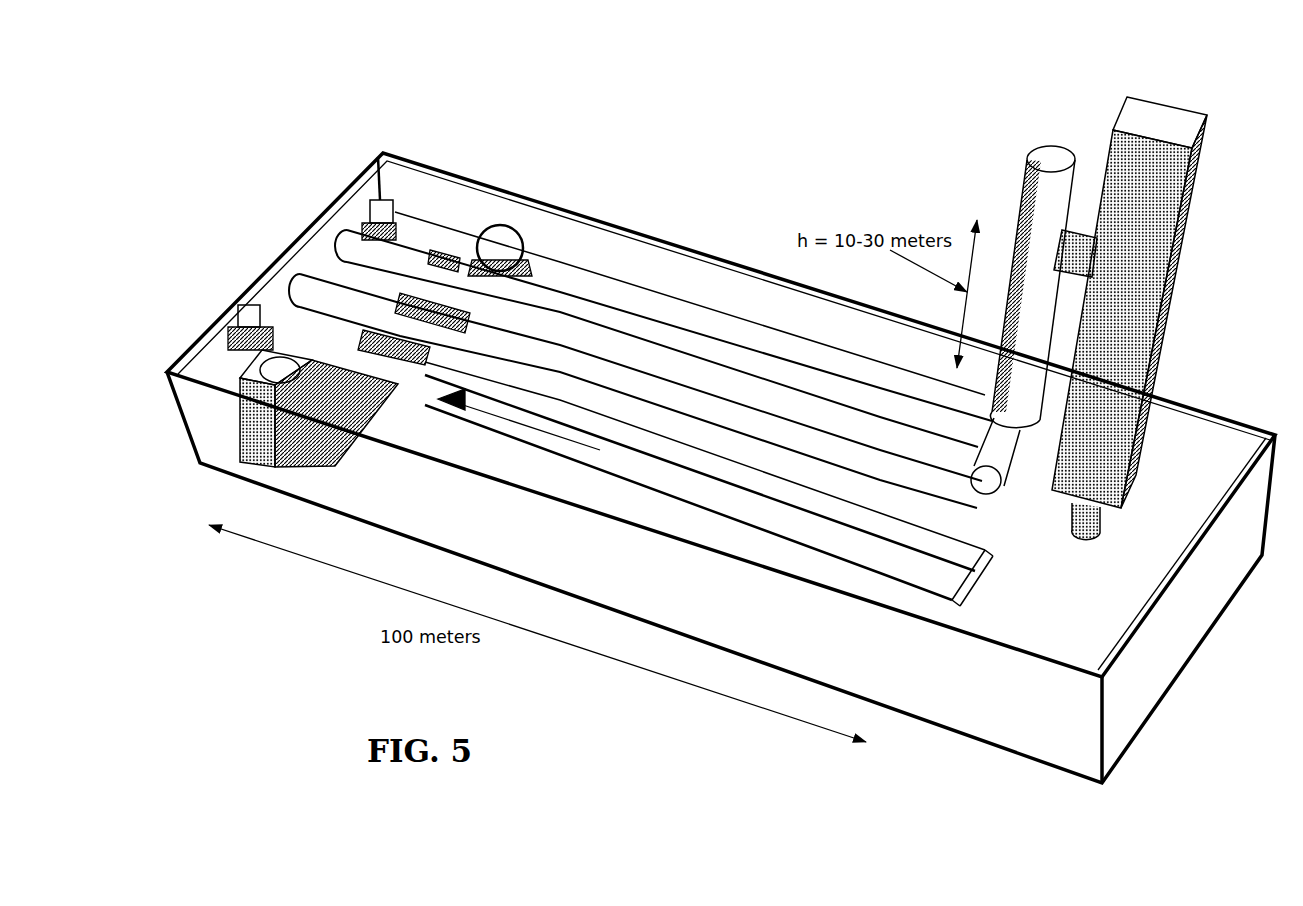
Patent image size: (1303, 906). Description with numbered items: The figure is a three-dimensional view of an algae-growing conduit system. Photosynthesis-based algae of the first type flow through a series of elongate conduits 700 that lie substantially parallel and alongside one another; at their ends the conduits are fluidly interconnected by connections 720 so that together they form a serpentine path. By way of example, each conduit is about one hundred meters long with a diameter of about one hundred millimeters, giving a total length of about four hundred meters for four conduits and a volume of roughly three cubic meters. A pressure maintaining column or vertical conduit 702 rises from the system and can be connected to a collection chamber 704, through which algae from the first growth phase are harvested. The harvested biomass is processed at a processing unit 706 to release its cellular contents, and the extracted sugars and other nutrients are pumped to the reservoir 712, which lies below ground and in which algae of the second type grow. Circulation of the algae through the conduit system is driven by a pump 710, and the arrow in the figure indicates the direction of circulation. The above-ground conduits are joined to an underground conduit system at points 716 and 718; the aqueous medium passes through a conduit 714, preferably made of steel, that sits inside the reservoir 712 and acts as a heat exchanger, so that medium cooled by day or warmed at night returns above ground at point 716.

The elongate conduits 700 is at (750, 330).
The pressure maintaining column/conduit 702 is at (1025, 210).
The collection chamber 704 is at (1172, 190).
The processing unit 706 is at (1096, 533).
The pump 710 is at (503, 240).
The reservoir 712 is at (1020, 740).
The conduit 714 is at (243, 388).
The connection point 716 is at (378, 200).
The connection point 718 is at (247, 305).
The connections 720 is at (323, 263).